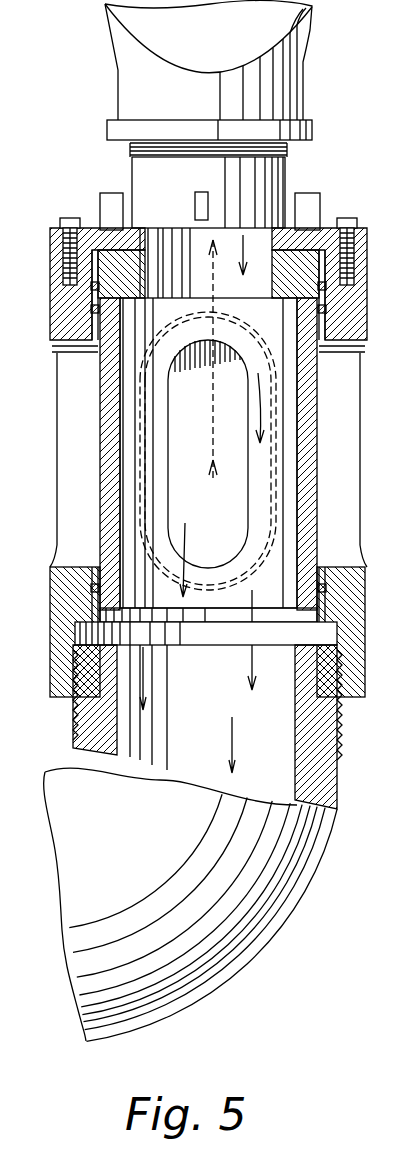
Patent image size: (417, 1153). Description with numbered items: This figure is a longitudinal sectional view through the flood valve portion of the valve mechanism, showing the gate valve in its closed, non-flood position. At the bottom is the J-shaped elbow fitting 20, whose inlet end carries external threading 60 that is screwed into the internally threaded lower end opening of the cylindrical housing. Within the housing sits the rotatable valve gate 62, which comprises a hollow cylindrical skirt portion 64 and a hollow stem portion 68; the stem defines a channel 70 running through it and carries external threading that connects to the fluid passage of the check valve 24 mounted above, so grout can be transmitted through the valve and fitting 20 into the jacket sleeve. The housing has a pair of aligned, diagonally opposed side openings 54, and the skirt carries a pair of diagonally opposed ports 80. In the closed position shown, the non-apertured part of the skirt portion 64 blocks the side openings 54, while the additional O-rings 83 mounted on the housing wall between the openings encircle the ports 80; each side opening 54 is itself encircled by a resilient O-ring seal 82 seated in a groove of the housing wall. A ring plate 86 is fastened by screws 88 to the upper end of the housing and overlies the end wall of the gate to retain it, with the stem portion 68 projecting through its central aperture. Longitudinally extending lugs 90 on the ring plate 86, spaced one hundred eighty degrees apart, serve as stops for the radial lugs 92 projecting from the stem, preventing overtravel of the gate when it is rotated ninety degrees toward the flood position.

The J-shaped elbow fitting 20 is at (325, 798).
The second valve portion 24 is at (280, 90).
The side openings 54 is at (159, 295).
The external threading 60 is at (338, 712).
The valve gate 62 is at (330, 496).
The skirt portion 64 is at (103, 470).
The stem portion 68 is at (283, 172).
The channel 70 is at (256, 257).
The ports 80 is at (237, 472).
The O-ring seal 82 is at (92, 312).
The additional O-rings 83 is at (103, 430).
The ring plate 86 is at (97, 230).
The screws 88 is at (352, 270).
The longitudinally extending lugs 90 is at (312, 195).
The radial lugs 92 is at (263, 146).